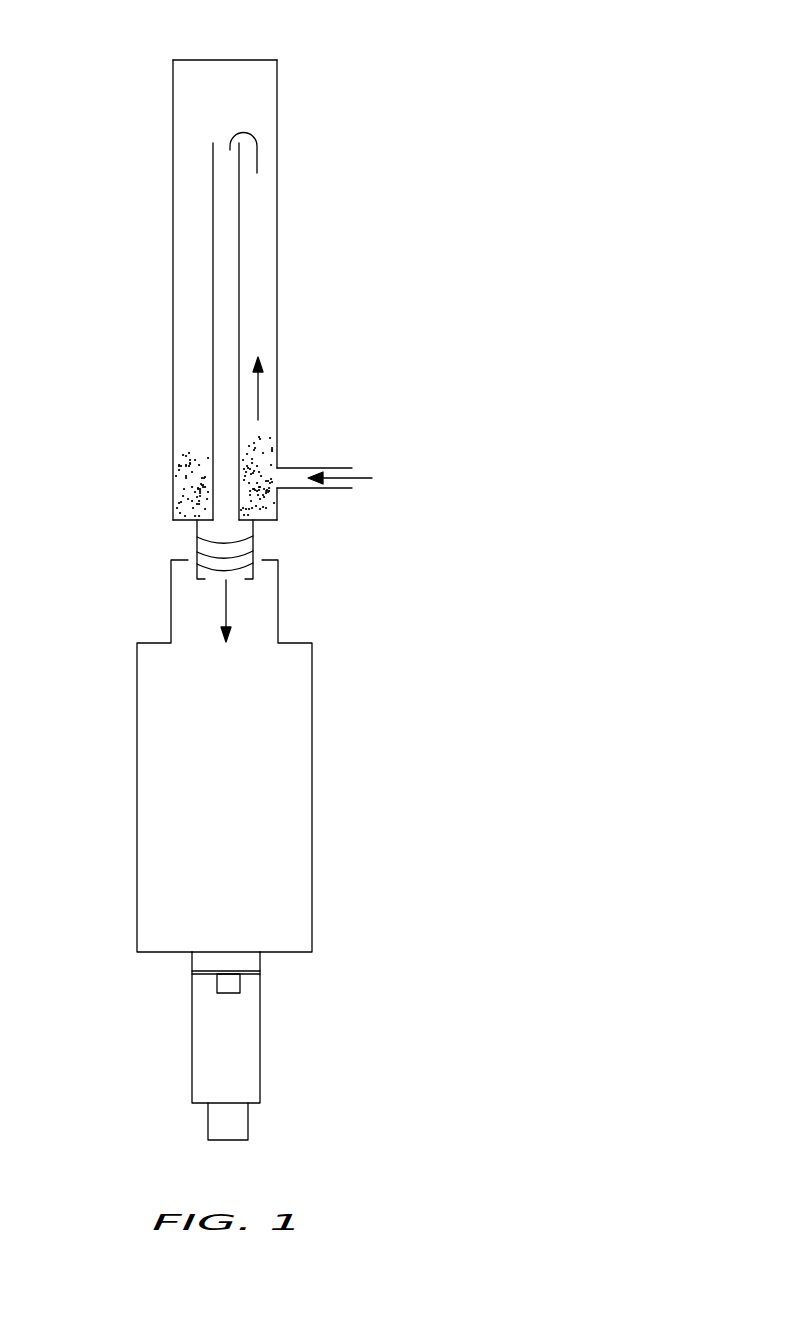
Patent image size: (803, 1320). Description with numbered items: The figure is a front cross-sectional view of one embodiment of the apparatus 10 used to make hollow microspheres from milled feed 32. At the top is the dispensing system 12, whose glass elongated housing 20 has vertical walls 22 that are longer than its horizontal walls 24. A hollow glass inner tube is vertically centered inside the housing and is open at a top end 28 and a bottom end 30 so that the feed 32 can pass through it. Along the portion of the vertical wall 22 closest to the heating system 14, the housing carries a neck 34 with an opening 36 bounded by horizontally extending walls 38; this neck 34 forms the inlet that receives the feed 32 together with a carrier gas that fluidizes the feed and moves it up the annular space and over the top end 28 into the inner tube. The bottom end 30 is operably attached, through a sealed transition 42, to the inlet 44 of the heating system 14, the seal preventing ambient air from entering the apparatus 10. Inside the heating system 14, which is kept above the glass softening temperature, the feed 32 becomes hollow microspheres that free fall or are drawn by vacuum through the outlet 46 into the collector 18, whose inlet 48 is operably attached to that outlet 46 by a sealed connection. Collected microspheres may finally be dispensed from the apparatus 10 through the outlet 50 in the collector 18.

The apparatus 10 is at (350, 60).
The dispensing system 12 is at (304, 272).
The heating system 14 is at (278, 777).
The collector 18 is at (238, 1036).
The elongated housing 20 is at (260, 207).
The vertical walls 22 is at (277, 114).
The horizontal walls 24 is at (238, 58).
The top end 28 is at (223, 150).
The bottom end 30 is at (222, 507).
The feed 32 is at (258, 462).
The neck 34 is at (355, 456).
The opening 36 is at (362, 479).
The horizontally extending walls 38 is at (292, 468).
The transition 42 is at (197, 540).
The inlet 44 is at (232, 570).
The outlet 46 is at (228, 953).
The inlet 48 is at (233, 984).
The outlet 50 is at (240, 1121).